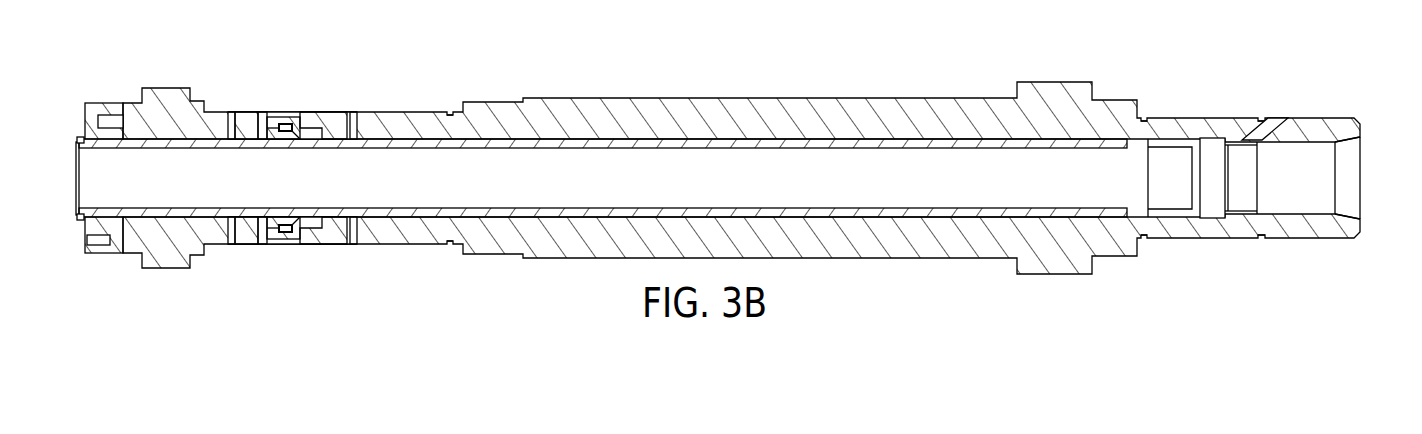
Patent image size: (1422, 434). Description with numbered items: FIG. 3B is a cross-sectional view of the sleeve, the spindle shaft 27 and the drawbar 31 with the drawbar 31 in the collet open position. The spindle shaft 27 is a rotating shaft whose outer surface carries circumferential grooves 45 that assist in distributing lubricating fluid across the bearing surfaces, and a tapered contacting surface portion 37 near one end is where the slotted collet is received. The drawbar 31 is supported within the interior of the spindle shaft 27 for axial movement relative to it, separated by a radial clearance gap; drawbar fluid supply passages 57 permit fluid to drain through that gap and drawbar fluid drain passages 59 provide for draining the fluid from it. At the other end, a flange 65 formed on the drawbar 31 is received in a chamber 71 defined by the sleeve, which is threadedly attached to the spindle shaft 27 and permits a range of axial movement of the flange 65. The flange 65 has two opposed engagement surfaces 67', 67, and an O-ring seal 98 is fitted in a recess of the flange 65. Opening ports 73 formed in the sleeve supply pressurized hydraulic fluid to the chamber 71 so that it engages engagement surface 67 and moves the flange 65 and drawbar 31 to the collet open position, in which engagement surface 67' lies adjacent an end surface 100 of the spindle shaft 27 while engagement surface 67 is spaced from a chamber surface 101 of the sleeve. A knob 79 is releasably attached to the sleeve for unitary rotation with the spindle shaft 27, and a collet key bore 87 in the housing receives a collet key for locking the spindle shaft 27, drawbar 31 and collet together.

The spindle shaft 27 is at (704, 96).
The drawbar 31 is at (957, 146).
The tapered contacting surface portion 37 is at (1347, 212).
The circumferential grooves 45 is at (449, 112).
The drawbar fluid supply passages 57 is at (232, 112).
The drawbar fluid drain passages 59 is at (232, 244).
The flange 65 is at (273, 121).
The engagement surface 67 is at (281, 178).
The engagement surface 67' is at (316, 178).
The chamber 71 is at (258, 132).
The opening ports 73 is at (264, 115).
The knob 79 is at (80, 137).
The collet key bore 87 is at (1287, 118).
The O-ring seal 98 is at (286, 128).
The end surface 100 is at (313, 116).
The chamber surface 101 is at (238, 146).